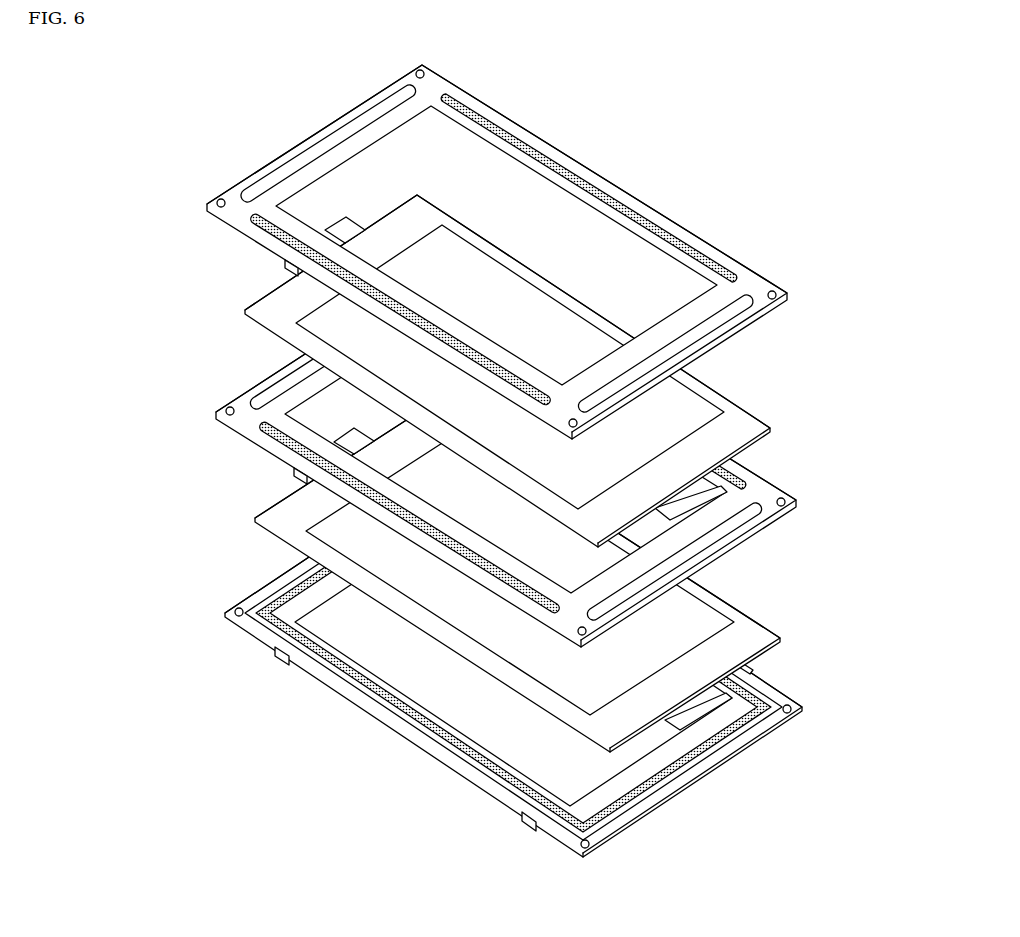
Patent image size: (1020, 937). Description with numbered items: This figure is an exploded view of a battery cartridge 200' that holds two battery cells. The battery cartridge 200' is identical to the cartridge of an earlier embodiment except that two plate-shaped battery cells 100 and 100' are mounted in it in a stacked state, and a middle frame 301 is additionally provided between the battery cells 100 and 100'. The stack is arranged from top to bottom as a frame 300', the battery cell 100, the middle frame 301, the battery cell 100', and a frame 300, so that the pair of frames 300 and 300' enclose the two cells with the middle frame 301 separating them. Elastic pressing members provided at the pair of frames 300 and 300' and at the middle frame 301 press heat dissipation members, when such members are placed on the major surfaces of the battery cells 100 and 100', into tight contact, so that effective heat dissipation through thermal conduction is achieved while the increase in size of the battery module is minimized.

The battery cartridge 200' is at (422, 462).
The frame 300' is at (471, 252).
The middle frame 301 is at (226, 412).
The frame 300 is at (306, 685).
The battery cell 100 is at (765, 403).
The battery cell 100' is at (559, 580).